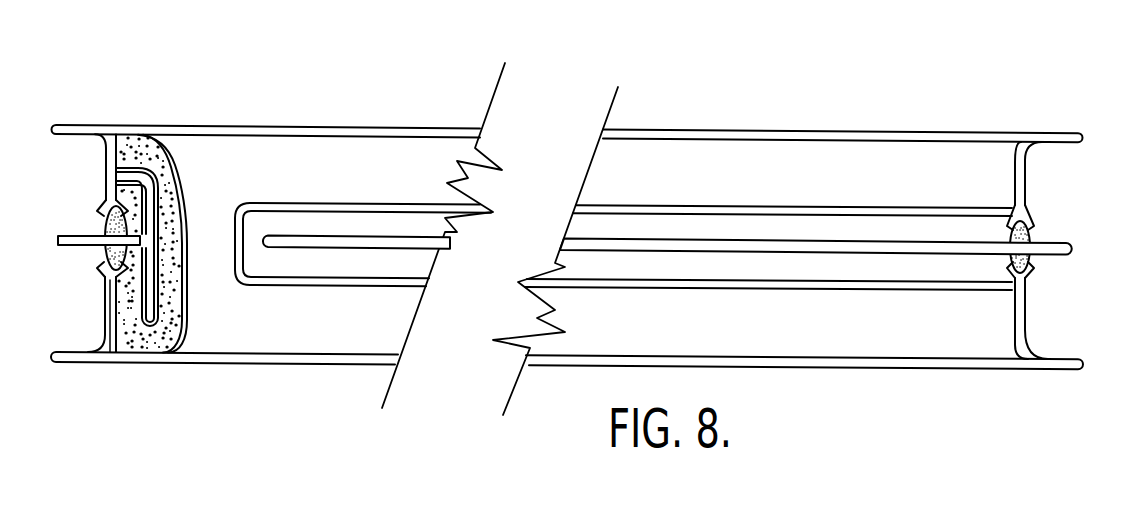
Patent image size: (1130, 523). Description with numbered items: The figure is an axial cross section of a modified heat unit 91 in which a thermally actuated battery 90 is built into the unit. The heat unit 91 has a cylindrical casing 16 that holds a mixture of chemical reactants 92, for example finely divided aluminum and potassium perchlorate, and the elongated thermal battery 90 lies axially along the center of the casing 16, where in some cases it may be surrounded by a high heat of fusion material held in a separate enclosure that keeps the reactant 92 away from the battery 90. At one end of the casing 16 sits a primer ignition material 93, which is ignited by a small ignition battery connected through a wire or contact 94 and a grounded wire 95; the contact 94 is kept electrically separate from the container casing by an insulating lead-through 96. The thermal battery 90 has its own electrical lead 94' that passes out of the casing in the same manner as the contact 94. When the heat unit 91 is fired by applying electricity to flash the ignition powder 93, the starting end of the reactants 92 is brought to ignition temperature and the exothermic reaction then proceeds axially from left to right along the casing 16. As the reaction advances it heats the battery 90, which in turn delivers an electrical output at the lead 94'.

The casing 16 is at (971, 133).
The thermally actuated battery 90 is at (377, 207).
The heat unit 91 is at (299, 88).
The chemical reactant 92 is at (213, 342).
The primer ignition material 93 is at (143, 343).
The contact 94 is at (99, 226).
The electrical lead 94' is at (833, 234).
The grounded wire 95 is at (158, 186).
The insulating lead-through 96 is at (104, 251).